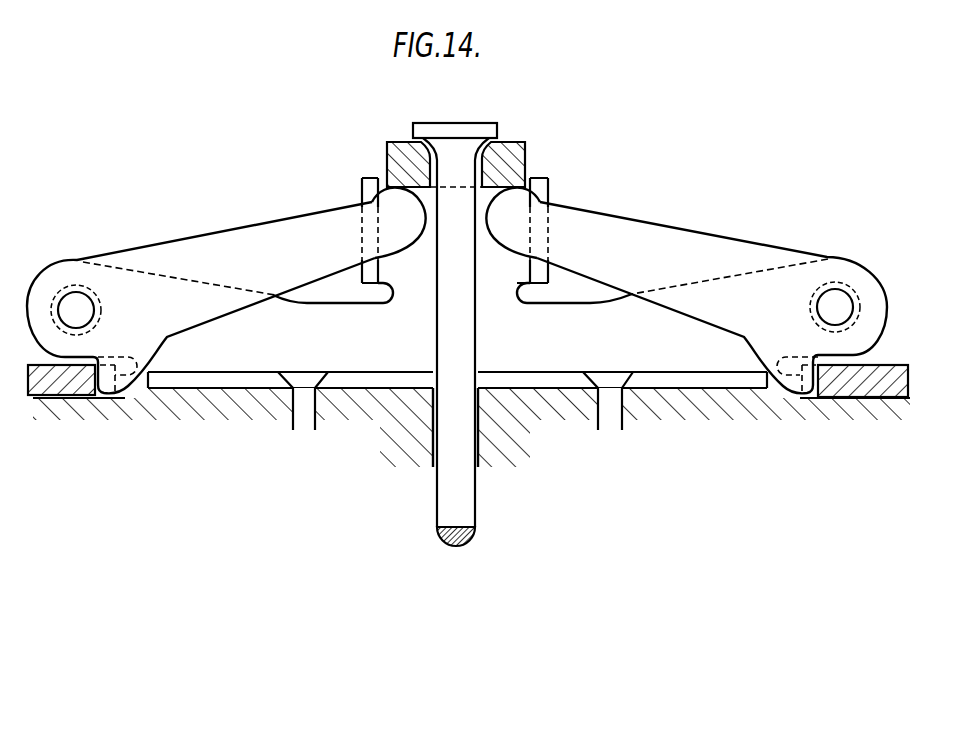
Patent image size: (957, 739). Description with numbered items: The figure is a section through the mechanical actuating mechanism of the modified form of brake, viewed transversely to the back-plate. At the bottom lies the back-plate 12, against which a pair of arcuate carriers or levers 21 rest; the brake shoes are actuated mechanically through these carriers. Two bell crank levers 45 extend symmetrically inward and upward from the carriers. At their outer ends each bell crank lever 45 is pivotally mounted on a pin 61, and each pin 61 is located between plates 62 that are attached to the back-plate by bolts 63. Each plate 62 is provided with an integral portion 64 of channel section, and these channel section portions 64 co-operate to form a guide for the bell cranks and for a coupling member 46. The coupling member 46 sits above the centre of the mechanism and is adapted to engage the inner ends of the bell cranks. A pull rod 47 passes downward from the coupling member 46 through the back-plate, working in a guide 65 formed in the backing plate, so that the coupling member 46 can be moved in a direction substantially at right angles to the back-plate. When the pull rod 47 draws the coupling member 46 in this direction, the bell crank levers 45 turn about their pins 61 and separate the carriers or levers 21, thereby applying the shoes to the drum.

The base plate 12 is at (178, 402).
The arcuate carrier 21 is at (70, 385).
The bell crank lever 45 is at (233, 245).
The coupling member 46 is at (508, 164).
The pull rod 47 is at (465, 508).
The pin 61 is at (73, 298).
The plate 62 is at (247, 357).
The bolt 63 is at (305, 378).
The channel section portion 64 is at (547, 205).
The guide 65 is at (430, 407).